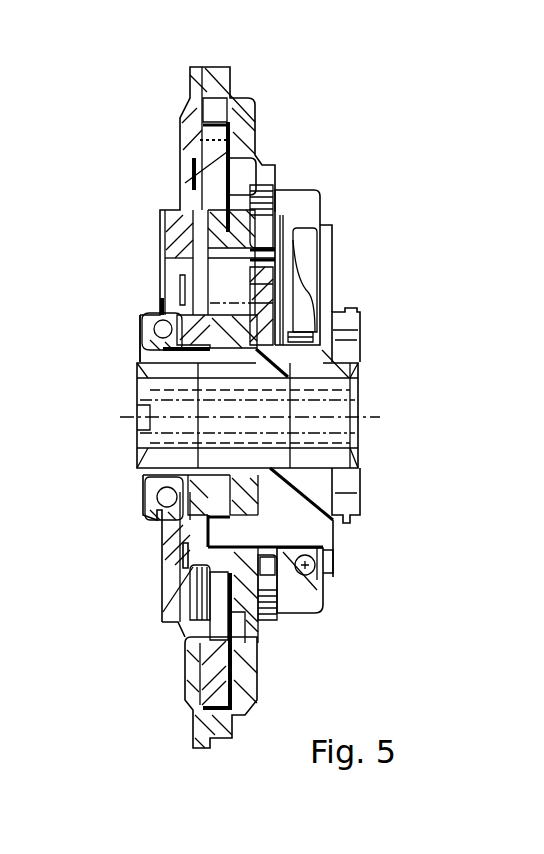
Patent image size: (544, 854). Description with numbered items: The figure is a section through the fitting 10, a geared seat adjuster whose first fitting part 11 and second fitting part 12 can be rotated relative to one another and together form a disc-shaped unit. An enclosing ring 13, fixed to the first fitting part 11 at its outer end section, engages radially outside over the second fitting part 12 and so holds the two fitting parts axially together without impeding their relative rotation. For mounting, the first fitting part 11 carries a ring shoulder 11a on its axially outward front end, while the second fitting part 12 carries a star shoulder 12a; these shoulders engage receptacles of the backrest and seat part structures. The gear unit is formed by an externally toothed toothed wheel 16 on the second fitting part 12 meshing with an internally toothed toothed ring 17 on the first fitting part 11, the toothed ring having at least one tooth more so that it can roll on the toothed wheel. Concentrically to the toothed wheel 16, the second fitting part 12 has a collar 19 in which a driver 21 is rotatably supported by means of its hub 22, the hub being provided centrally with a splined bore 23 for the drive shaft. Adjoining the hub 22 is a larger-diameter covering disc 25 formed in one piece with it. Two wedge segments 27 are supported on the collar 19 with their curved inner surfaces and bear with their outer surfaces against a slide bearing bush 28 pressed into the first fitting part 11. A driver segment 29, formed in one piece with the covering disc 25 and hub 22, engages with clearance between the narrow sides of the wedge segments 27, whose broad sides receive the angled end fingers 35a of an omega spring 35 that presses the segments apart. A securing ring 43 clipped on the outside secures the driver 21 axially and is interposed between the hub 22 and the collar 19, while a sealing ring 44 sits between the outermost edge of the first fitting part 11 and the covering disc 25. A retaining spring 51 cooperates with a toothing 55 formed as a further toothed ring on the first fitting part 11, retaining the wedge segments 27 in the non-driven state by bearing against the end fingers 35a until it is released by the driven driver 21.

The fitting 10 is at (383, 108).
The first fitting part 11 is at (277, 168).
The ring shoulder 11a is at (270, 640).
The second fitting part 12 is at (192, 168).
The star shoulder 12a is at (168, 623).
The enclosing ring 13 is at (195, 102).
The toothed wheel 16 is at (217, 138).
The toothed ring 17 is at (217, 112).
The collar 19 is at (232, 333).
The driver 21 is at (360, 472).
The hub 22 is at (232, 372).
The bore 23 is at (147, 440).
The covering disc 25 is at (323, 258).
The wedge segments 27 is at (228, 295).
The slide bearing bush 28 is at (263, 550).
The driver segment 29 is at (243, 533).
The omega spring 35 is at (323, 553).
The end finger 35a is at (267, 296).
The securing ring 43 is at (163, 536).
The sealing ring 44 is at (322, 612).
The retaining spring 51 is at (283, 215).
The toothing 55 is at (277, 205).